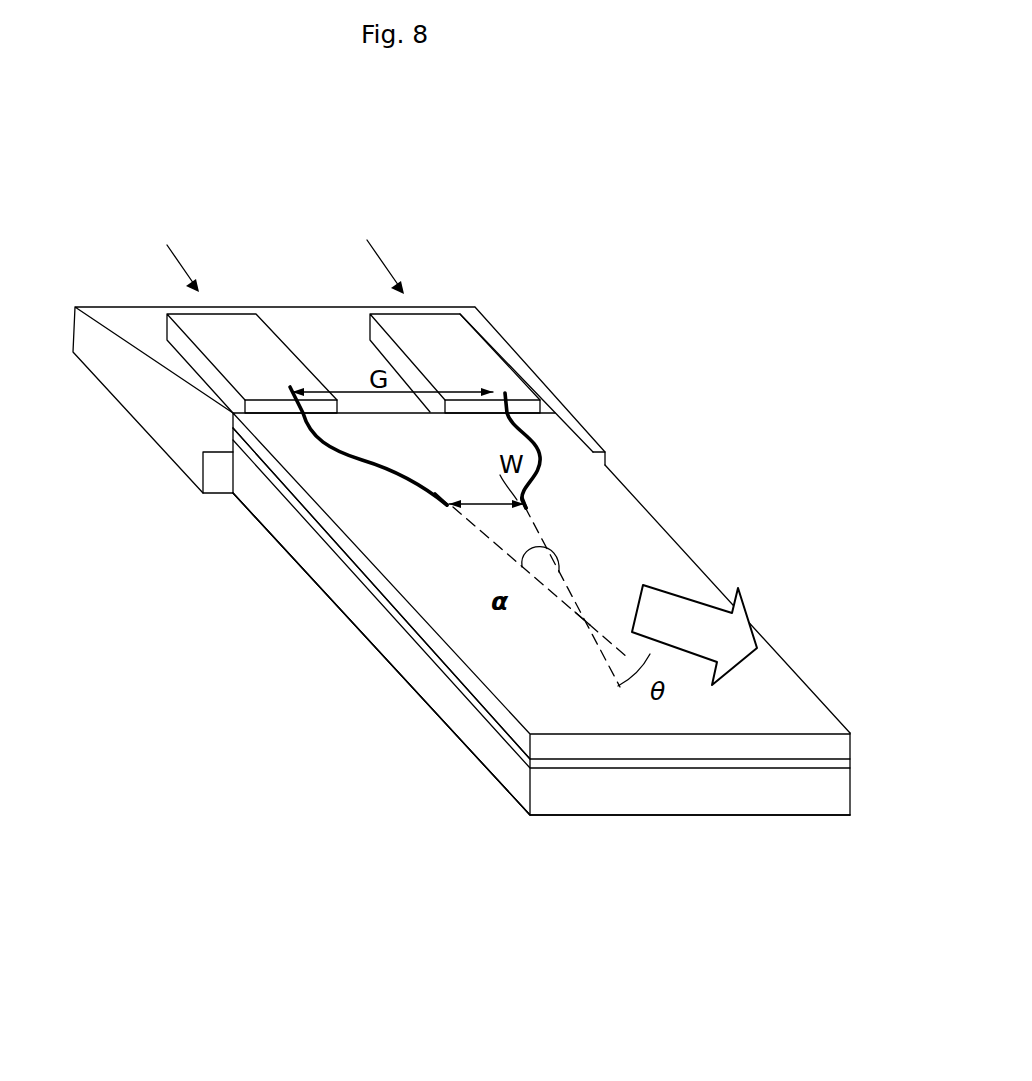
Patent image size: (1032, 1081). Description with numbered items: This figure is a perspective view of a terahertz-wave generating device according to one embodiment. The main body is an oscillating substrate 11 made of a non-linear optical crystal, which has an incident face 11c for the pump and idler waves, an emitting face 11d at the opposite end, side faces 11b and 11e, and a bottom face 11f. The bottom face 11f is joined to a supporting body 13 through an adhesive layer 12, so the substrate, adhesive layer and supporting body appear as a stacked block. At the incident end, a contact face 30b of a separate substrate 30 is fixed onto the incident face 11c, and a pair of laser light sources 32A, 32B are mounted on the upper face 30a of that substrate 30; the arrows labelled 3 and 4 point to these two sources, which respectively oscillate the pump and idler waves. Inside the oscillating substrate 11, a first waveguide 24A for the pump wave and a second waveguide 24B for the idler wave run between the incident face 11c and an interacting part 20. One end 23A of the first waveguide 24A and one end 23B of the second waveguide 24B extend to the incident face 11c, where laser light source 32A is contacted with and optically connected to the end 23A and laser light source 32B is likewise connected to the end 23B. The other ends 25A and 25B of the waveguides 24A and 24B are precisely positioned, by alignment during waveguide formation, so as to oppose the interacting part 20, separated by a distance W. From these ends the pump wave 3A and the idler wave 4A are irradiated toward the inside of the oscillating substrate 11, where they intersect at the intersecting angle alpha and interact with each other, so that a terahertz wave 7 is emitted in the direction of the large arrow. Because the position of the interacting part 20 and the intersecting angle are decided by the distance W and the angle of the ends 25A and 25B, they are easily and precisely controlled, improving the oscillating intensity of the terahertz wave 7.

The magnetic head (write head) 3 is at (390, 262).
The magnetic head (read head) 4 is at (190, 258).
The pump wave 3A is at (540, 533).
The idler wave 4A is at (480, 530).
The terahertz wave 7 is at (693, 612).
The oscillating substrate 11 is at (645, 495).
The side face 11b is at (670, 536).
The incident face 11c is at (233, 428).
The emitting face 11d is at (820, 745).
The side face 11e is at (342, 538).
The bottom face 11f is at (455, 690).
The adhesive layer 12 is at (420, 633).
The supporting body 13 is at (328, 583).
The interacting part 20 is at (582, 620).
The one end of first waveguide 23A is at (508, 400).
The one end of second waveguide 23B is at (290, 390).
The first waveguide 24A is at (540, 447).
The second waveguide 24B is at (362, 460).
The other end of first waveguide 25A is at (527, 504).
The other end of second waveguide 25B is at (450, 503).
The substrate 30 is at (533, 364).
The upper face of substrate 30a is at (533, 385).
The contact face of substrate 30b is at (605, 450).
The laser light source 32A is at (447, 313).
The laser light source 32B is at (247, 315).